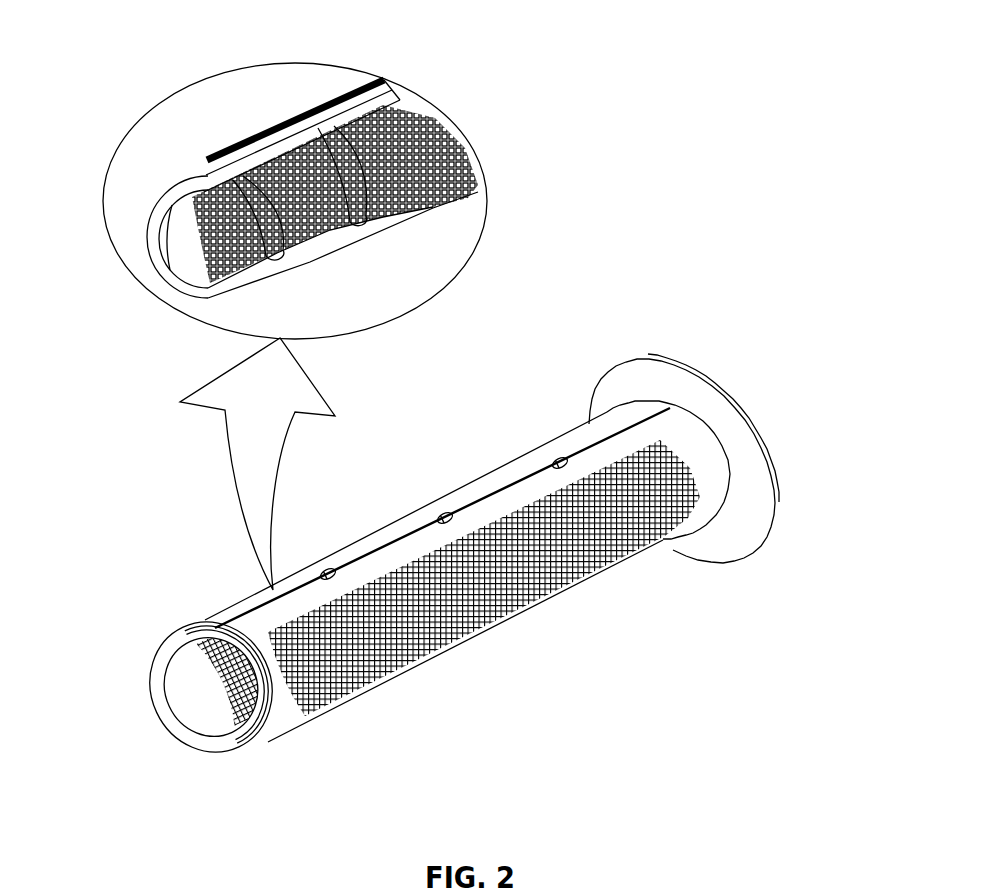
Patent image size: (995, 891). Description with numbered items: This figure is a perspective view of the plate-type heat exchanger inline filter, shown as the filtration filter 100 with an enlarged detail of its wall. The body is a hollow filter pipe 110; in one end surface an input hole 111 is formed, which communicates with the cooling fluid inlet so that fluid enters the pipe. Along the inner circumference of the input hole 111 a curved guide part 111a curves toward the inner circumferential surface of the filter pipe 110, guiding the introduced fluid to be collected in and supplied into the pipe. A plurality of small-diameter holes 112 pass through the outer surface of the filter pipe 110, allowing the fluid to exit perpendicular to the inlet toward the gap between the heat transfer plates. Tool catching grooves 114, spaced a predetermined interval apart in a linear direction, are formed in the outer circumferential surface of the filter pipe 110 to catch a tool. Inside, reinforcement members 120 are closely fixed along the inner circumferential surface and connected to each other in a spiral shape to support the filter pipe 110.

The filtration filter 100 is at (643, 316).
The filter pipe 110 is at (207, 620).
The input hole 111 is at (193, 677).
The curved guide part 111a is at (180, 712).
The small-diameter holes 112 is at (600, 560).
The tool catching grooves 114 is at (553, 460).
The reinforcement members 120 is at (377, 228).